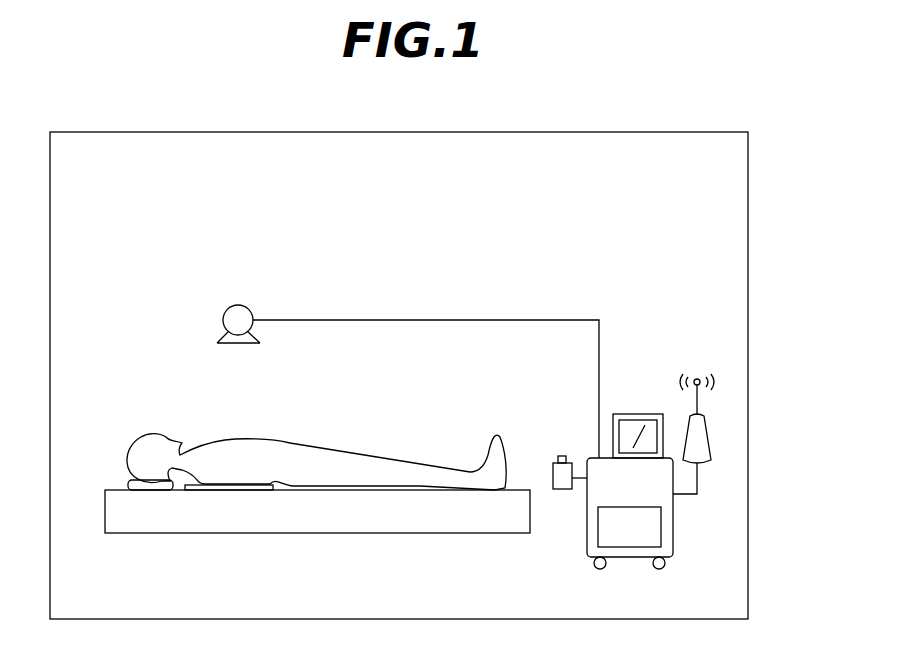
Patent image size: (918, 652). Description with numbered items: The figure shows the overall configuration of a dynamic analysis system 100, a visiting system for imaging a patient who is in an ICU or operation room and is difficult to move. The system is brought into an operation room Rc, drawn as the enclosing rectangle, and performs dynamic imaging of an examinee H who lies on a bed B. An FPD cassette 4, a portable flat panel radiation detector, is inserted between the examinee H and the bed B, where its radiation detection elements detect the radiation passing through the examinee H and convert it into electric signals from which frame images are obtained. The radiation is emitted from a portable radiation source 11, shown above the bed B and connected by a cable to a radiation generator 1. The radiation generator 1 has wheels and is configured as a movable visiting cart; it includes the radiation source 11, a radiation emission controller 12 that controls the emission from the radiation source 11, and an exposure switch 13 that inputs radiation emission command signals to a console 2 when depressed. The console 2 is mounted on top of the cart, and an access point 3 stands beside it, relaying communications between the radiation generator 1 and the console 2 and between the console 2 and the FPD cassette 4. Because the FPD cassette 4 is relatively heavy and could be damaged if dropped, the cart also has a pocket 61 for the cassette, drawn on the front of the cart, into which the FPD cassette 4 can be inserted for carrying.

The operation room Rc is at (666, 131).
The dynamic analysis system 100 is at (684, 266).
The radiation source 11 is at (235, 304).
The bed B is at (157, 523).
The FPD cassette 4 is at (204, 492).
The examinee H is at (140, 437).
The radiation generator 1 is at (659, 461).
The radiation emission controller 12 is at (586, 537).
The console 2 is at (637, 414).
The pocket 61 is at (640, 531).
The exposure switch 13 is at (561, 491).
The access point 3 is at (728, 425).